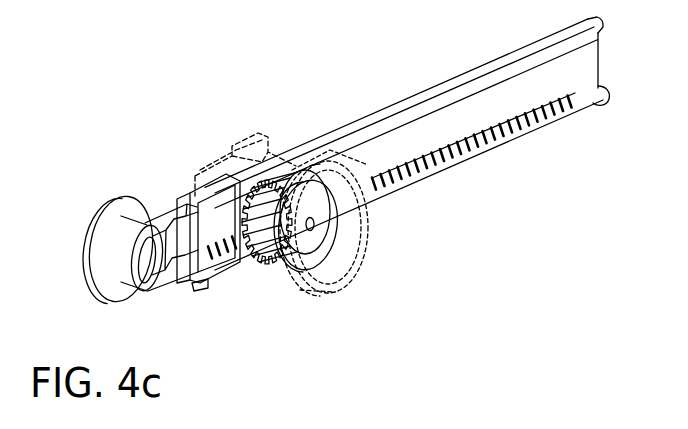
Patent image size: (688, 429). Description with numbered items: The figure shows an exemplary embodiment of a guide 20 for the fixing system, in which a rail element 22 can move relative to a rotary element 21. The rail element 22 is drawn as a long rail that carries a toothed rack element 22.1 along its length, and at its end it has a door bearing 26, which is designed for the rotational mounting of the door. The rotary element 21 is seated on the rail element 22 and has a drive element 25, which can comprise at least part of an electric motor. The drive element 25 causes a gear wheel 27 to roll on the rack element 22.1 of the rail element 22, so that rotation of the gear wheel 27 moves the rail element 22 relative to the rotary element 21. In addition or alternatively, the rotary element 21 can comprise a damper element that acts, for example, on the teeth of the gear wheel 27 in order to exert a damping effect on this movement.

The guide 20 is at (340, 178).
The rotary element 21 is at (332, 165).
The rail element 22 is at (407, 143).
The rack element 22.1 is at (495, 137).
The drive element 25 is at (330, 245).
The door bearing 26 is at (147, 267).
The gear wheel 27 is at (272, 255).